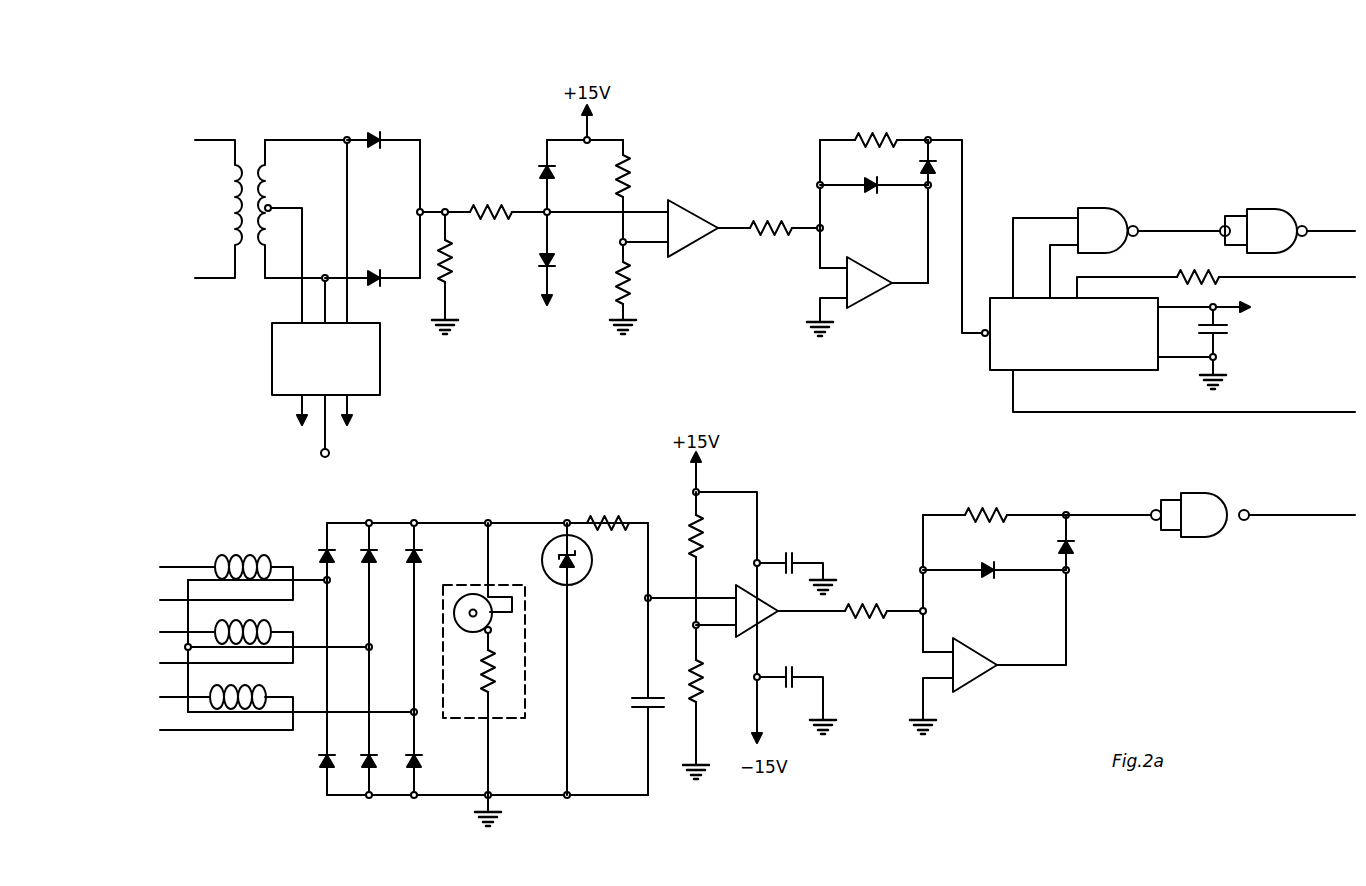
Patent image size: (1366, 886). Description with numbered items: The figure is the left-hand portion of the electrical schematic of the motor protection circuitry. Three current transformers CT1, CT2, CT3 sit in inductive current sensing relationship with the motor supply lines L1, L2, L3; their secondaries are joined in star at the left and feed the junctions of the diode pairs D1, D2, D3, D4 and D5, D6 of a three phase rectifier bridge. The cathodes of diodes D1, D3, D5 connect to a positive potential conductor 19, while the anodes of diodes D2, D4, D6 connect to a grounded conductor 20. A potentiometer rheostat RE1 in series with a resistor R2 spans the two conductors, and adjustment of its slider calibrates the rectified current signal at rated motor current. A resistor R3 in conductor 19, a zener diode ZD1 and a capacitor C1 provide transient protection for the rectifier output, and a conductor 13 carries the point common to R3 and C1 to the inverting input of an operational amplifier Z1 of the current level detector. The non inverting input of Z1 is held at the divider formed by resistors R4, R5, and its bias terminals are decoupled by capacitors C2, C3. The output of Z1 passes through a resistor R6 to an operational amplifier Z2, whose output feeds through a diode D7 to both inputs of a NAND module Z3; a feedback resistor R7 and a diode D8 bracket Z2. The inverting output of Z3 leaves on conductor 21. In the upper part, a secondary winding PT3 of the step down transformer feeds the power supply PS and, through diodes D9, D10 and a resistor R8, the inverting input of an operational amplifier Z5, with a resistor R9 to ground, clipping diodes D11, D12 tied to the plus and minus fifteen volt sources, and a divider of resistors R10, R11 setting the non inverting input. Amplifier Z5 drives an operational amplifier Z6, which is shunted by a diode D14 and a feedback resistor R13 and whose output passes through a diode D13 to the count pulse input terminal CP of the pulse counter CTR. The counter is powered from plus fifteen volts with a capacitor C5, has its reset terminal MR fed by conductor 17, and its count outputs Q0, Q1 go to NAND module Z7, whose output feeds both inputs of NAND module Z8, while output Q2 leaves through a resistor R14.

The secondary winding PT3 is at (249, 151).
The diode D9 is at (378, 135).
The diode D10 is at (377, 274).
The power supply PS is at (380, 372).
The resistor R8 is at (501, 204).
The resistor R9 is at (450, 268).
The voltage clipping diode D11 is at (538, 178).
The companion clipping diode D12 is at (554, 262).
The voltage dividing resistor R10 is at (631, 180).
The voltage dividing resistor R11 is at (631, 294).
The operational amplifier Z5 is at (744, 228).
The feedback resistor R13 is at (869, 140).
The diode D13 is at (936, 166).
The diode D14 is at (874, 192).
The operational amplifier Z6 is at (867, 296).
The NAND module Z7 is at (1149, 230).
The NAND module Z8 is at (1287, 231).
The resistor R14 is at (1208, 276).
The pulse counter CTR is at (1123, 362).
The capacitor C5 is at (1228, 332).
The count pulse input terminal CP is at (982, 336).
The reset terminal MR is at (1184, 391).
The count output terminal Q0 is at (1038, 271).
The count output terminal Q1 is at (1057, 284).
The count output terminal Q2 is at (1123, 300).
The conductor 17 is at (1308, 392).
The supply line L1 is at (226, 572).
The supply line L2 is at (225, 647).
The supply line L3 is at (225, 713).
The current transformer CT1 is at (257, 559).
The current transformer CT2 is at (258, 641).
The current transformer CT3 is at (256, 701).
The rectifier bridge diode D1 is at (322, 555).
The rectifier bridge diode D2 is at (318, 768).
The rectifier bridge diode D3 is at (363, 566).
The rectifier bridge diode D4 is at (358, 758).
The rectifier bridge diode D5 is at (406, 566).
The rectifier bridge diode D6 is at (401, 758).
The positive potential conductor 19 is at (450, 523).
The conductor 20 is at (462, 797).
The potentiometer rheostat RE1 is at (478, 586).
The resistor R2 is at (474, 729).
The zener diode ZD1 is at (592, 566).
The resistor R3 is at (610, 520).
The capacitor C1 is at (630, 701).
The conductor 13 is at (664, 597).
The voltage dividing resistor R4 is at (702, 550).
The voltage dividing resistor R5 is at (702, 698).
The operational amplifier Z1 is at (770, 611).
The capacitor C2 is at (794, 555).
The capacitor C3 is at (793, 667).
The resistor R6 is at (872, 607).
The feedback resistor R7 is at (997, 515).
The diode D7 is at (1075, 548).
The diode D8 is at (988, 569).
The operational amplifier Z2 is at (988, 686).
The NAND module Z3 is at (1210, 515).
The conductor 21 is at (1311, 516).